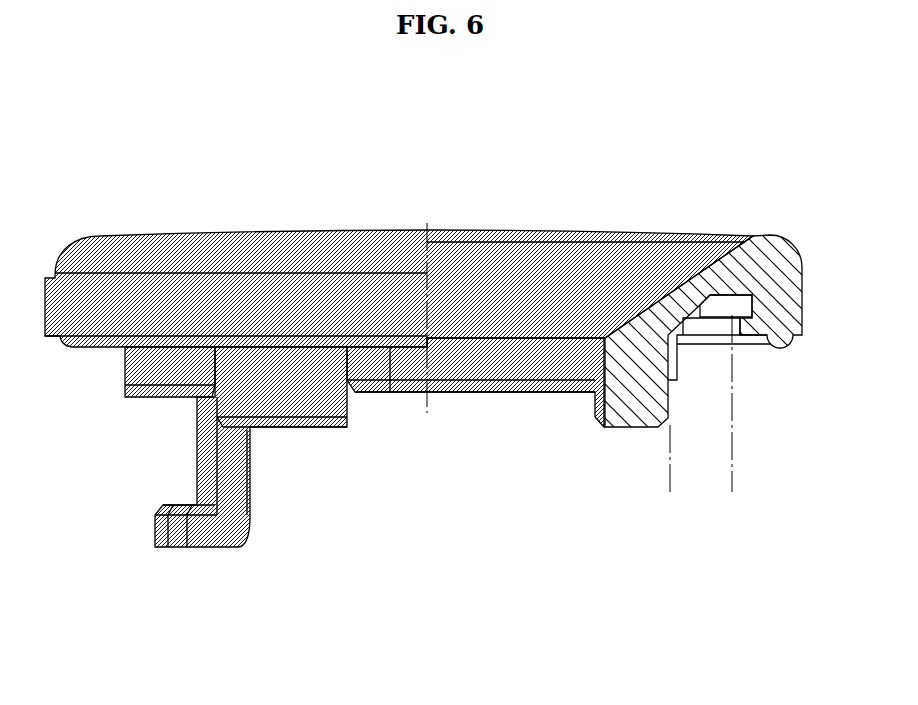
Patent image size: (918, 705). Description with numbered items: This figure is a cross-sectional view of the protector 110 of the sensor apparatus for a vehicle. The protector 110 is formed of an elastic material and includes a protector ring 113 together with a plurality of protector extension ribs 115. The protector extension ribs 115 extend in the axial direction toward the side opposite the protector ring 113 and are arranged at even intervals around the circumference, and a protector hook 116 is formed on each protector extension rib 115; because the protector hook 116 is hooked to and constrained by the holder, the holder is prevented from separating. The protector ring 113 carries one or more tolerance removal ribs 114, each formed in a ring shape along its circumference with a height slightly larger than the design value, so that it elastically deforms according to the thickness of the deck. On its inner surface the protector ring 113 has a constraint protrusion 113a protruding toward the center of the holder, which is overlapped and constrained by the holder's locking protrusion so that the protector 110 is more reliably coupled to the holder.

The protector 110 is at (231, 208).
The protector ring 113 is at (102, 260).
The constraint protrusion 113a is at (715, 327).
The tolerance removal rib 114 is at (780, 347).
The protector extension rib 115 is at (220, 468).
The protector hook 116 is at (212, 537).